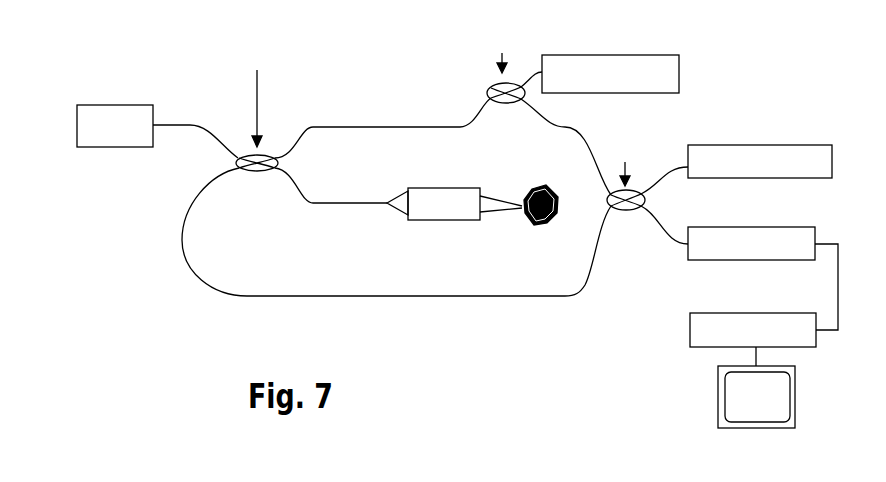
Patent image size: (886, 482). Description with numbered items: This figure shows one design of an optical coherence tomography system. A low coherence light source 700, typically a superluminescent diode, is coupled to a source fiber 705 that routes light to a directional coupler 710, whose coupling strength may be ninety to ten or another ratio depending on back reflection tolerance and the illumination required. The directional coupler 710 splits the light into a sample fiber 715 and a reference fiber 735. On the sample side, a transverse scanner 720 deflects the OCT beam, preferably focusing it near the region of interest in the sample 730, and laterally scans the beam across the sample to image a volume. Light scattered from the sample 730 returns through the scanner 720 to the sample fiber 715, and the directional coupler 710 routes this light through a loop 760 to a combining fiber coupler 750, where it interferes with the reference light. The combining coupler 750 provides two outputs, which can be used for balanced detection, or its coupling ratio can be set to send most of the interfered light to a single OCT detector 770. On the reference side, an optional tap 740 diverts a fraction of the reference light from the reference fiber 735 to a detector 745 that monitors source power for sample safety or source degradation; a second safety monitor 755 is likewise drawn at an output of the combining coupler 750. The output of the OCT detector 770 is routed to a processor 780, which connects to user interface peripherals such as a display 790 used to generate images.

The low coherence light source 700 is at (92, 98).
The source fiber 705 is at (205, 134).
The directional coupler 710 is at (251, 152).
The sample fiber 715 is at (335, 207).
The transverse scanner 720 is at (437, 187).
The sample 730 is at (528, 192).
The reference fiber 735 is at (420, 123).
The tap 740 is at (503, 112).
The detector 745 is at (687, 70).
The fiber coupler 750 is at (628, 217).
The safety monitor 755 is at (780, 140).
The loop 760 is at (188, 267).
The OCT detector 770 is at (775, 260).
The processor 780 is at (692, 348).
The display 790 is at (718, 402).